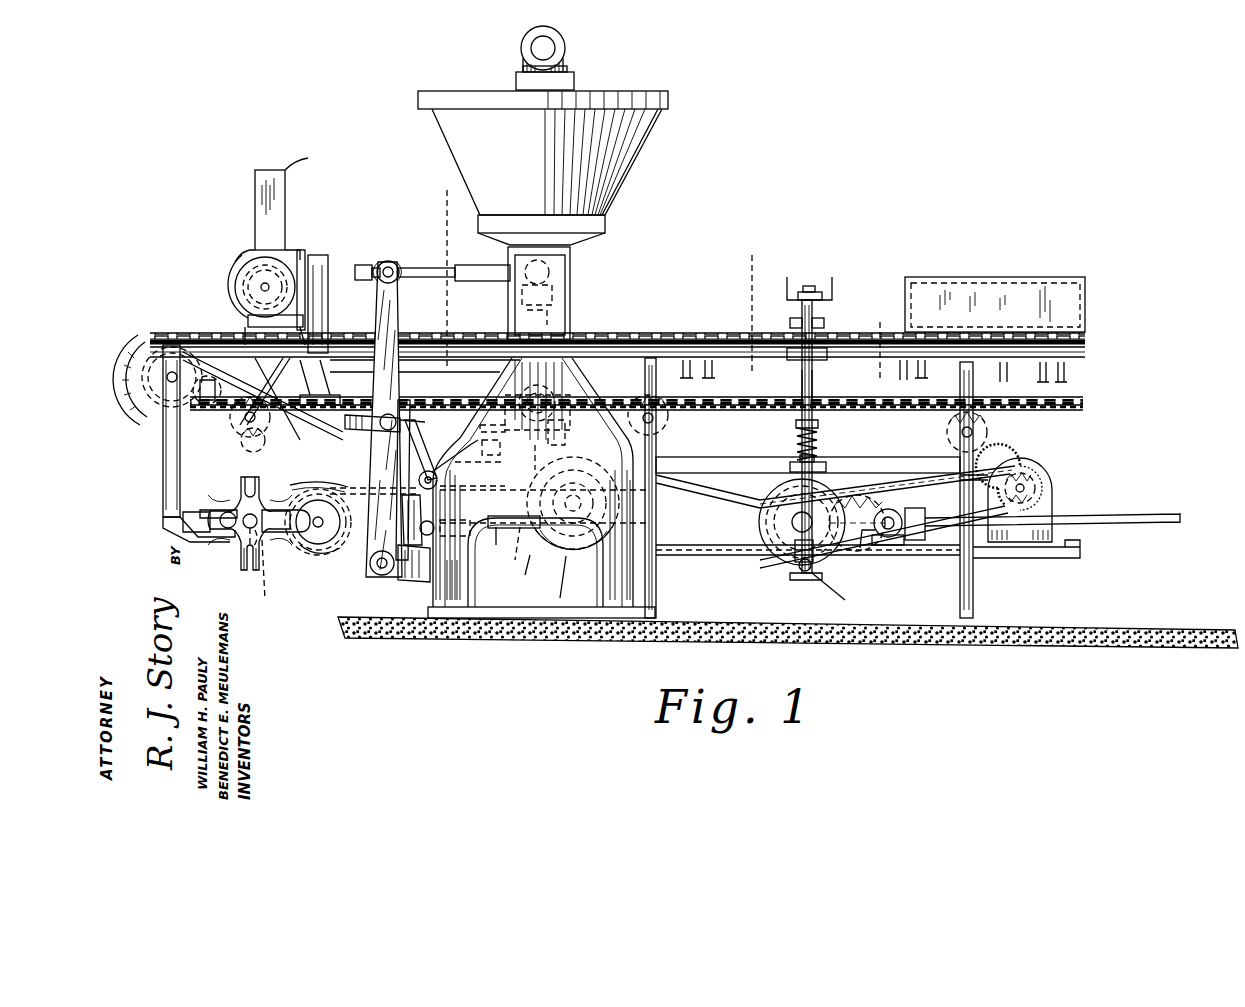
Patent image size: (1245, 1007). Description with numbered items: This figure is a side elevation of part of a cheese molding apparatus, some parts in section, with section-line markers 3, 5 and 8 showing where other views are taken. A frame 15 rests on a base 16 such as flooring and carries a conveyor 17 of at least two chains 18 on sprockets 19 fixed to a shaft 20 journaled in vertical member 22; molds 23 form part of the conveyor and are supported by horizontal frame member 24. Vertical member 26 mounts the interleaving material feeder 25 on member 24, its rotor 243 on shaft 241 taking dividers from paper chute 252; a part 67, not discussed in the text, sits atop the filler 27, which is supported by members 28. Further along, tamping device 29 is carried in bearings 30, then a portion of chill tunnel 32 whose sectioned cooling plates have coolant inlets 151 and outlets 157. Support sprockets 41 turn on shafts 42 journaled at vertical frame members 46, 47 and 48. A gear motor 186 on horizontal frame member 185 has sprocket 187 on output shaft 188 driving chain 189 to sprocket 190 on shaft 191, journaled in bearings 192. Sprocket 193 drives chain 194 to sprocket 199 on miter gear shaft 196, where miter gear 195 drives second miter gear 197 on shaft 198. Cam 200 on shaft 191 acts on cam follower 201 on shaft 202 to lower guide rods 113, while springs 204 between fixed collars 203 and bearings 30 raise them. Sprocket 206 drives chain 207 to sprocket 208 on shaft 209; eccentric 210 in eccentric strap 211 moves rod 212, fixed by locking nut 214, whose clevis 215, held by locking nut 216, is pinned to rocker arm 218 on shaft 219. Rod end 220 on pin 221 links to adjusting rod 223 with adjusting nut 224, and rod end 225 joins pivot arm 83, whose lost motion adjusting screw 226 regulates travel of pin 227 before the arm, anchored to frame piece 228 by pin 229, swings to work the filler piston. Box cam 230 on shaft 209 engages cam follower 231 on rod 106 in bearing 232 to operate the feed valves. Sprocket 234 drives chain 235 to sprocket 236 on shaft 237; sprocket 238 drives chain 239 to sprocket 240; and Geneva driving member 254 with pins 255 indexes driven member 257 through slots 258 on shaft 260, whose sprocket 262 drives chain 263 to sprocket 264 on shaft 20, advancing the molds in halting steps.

The section line 3 is at (468, 187).
The section line 5 is at (775, 255).
The section line 8 is at (880, 322).
The frame 15 is at (978, 600).
The base 16 is at (1165, 648).
The conveyor 17 is at (640, 333).
The chains 18 is at (700, 335).
The sprockets 19 is at (160, 345).
The shaft 20 is at (138, 388).
The vertical member 22 is at (163, 452).
The molds 23 is at (186, 335).
The horizontal frame member 24 is at (427, 333).
The interleaving material feeder 25 is at (287, 192).
The vertical member 26 is at (328, 297).
The filler 27 is at (652, 143).
The members 28 is at (595, 381).
The tamping device 29 is at (838, 283).
The bearings 30 is at (812, 366).
The chill tunnel 32 is at (975, 277).
The sprockets 41 is at (258, 418).
The shafts 42 is at (258, 432).
The vertical frame member 46 is at (975, 460).
The vertical frame member 47 is at (657, 603).
The vertical frame member 48 is at (283, 386).
The bearing 67 is at (568, 45).
The pivot arm 83 is at (357, 383).
The rod 106 is at (552, 388).
The guide rods 113 is at (815, 392).
The inlets 151 is at (712, 375).
The outlets 157 is at (1020, 392).
The horizontal frame member 185 is at (1015, 558).
The gear motor 186 is at (1052, 505).
The sprocket 187 is at (1028, 480).
The output shaft 188 is at (1040, 487).
The chain 189 is at (1020, 512).
The sprocket 190 is at (795, 568).
The shaft 191 is at (795, 562).
The bearings 192 is at (765, 556).
The sprocket 193 is at (778, 498).
The chain 194 is at (858, 508).
The miter gear 195 is at (895, 548).
The miter gear shaft 196 is at (898, 510).
The second miter gear 197 is at (915, 540).
The shaft 198 is at (1168, 526).
The sprocket 199 is at (866, 552).
The cam 200 is at (762, 508).
The cam follower 201 is at (800, 582).
The shaft 202 is at (828, 593).
The fixed collars 203 is at (796, 428).
The springs 204 is at (820, 440).
The sprocket 206 is at (775, 520).
The chain 207 is at (670, 485).
The sprocket 208 is at (585, 465).
The shaft 209 is at (517, 580).
The eccentric 210 is at (582, 552).
The eccentric strap 211 is at (554, 586).
The rod 212 is at (498, 530).
The locking nut 214 is at (514, 553).
The clevis 215 is at (455, 569).
The locking nut 216 is at (448, 519).
The rocker arm 218 is at (462, 475).
The shaft 219 is at (400, 480).
The rod end 220 is at (494, 443).
The pin 221 is at (494, 426).
The adjusting rod 223 is at (421, 450).
The adjusting nut 224 is at (465, 390).
The rod end 225 is at (390, 432).
The lost motion adjusting screw 226 is at (360, 428).
The pin 227 is at (392, 388).
The frame piece 228 is at (415, 582).
The pin 229 is at (380, 575).
The box cam 230 is at (656, 530).
The cam follower 231 is at (539, 451).
The bearing 232 is at (545, 430).
The sprocket 234 is at (530, 516).
The chain 235 is at (480, 456).
The sprocket 236 is at (340, 487).
The shaft 237 is at (303, 540).
The sprocket 238 is at (320, 555).
The chain 239 is at (324, 376).
The sprocket 240 is at (255, 250).
The shaft 241 is at (262, 287).
The rotor 243 is at (236, 290).
The paper chute 252 is at (311, 159).
The driving member 254 is at (345, 550).
The pins 255 is at (385, 503).
The driven member 257 is at (262, 450).
The slots 258 is at (175, 515).
The shaft 260 is at (247, 512).
The sprocket 262 is at (231, 502).
The chain 263 is at (225, 420).
The sprocket 264 is at (218, 375).